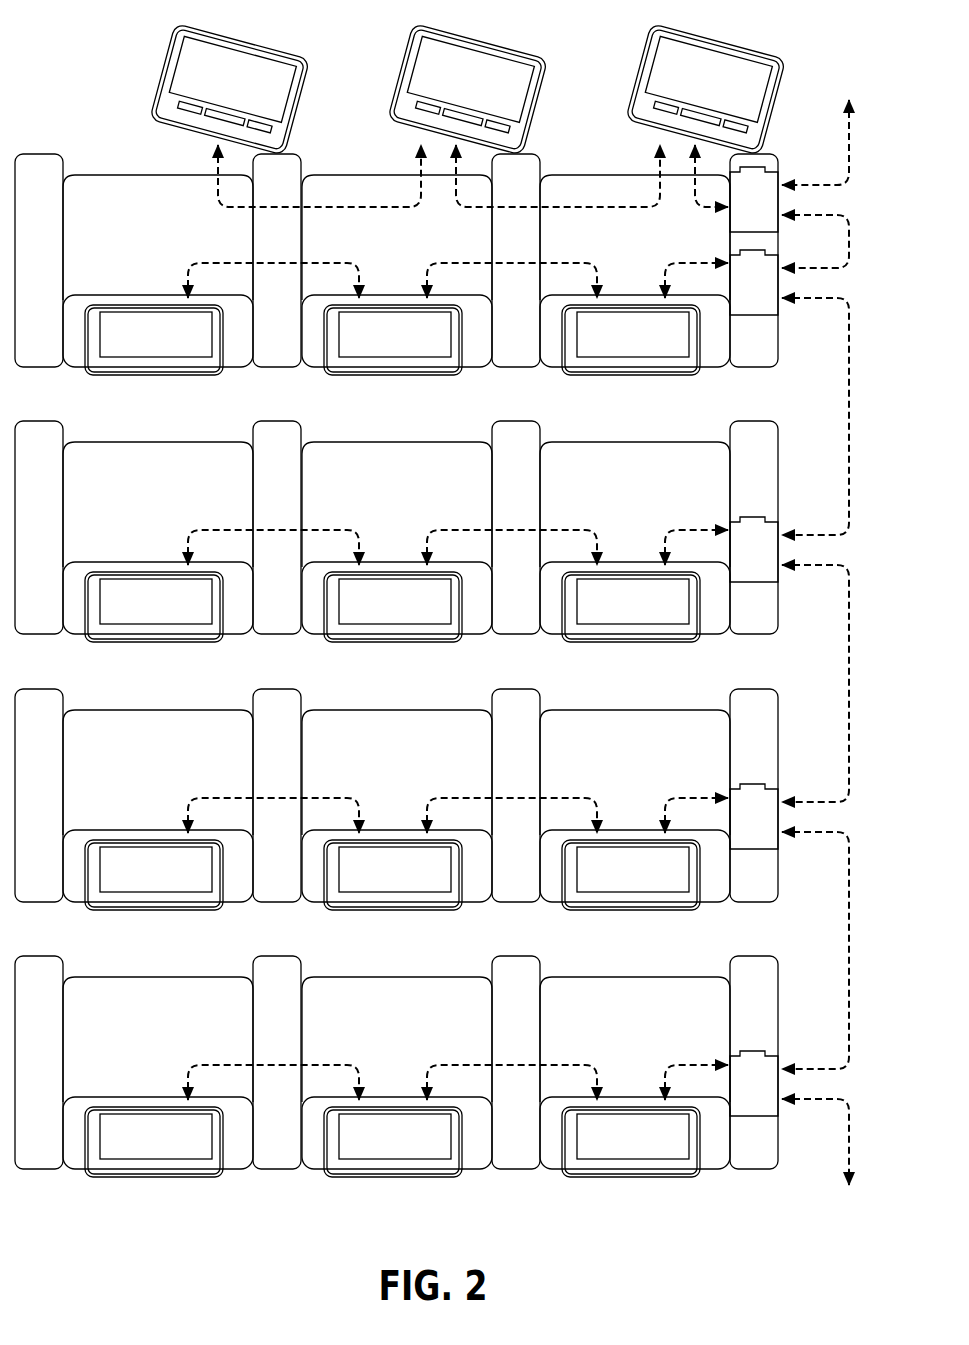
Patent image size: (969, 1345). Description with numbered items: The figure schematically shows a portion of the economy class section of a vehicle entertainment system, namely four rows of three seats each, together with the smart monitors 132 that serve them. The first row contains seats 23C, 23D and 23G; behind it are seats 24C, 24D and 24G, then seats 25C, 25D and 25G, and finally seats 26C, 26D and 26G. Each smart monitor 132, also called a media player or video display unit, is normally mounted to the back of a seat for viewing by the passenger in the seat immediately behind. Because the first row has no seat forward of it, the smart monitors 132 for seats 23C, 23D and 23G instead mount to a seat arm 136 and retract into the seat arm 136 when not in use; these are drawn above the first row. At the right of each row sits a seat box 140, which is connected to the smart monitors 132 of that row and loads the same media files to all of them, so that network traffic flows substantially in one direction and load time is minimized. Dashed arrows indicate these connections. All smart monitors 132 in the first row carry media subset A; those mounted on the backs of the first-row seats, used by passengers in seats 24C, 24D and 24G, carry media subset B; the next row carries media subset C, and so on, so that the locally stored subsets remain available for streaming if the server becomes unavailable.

The smart monitor 132 is at (176, 30).
The seat arm 136 is at (299, 156).
The seat box 140 is at (780, 180).
The seat 23C is at (130, 255).
The seat 23D is at (375, 255).
The seat 23G is at (615, 255).
The seat 24C is at (130, 522).
The seat 24D is at (375, 522).
The seat 24G is at (615, 522).
The seat 25C is at (130, 790).
The seat 25D is at (375, 790).
The seat 25G is at (615, 790).
The seat 26C is at (130, 1057).
The seat 26D is at (375, 1057).
The seat 26G is at (615, 1057).